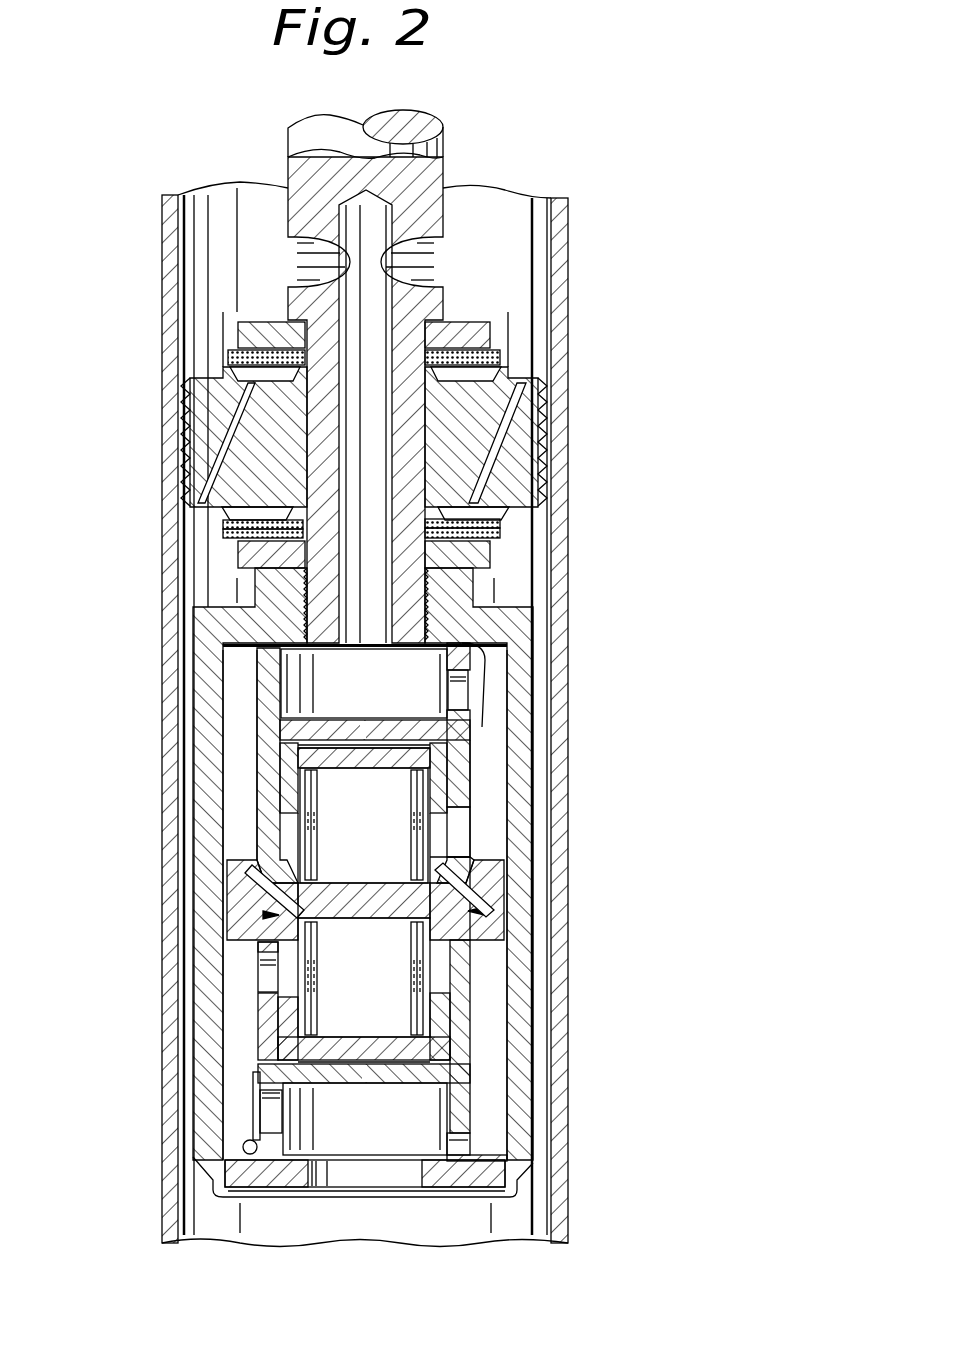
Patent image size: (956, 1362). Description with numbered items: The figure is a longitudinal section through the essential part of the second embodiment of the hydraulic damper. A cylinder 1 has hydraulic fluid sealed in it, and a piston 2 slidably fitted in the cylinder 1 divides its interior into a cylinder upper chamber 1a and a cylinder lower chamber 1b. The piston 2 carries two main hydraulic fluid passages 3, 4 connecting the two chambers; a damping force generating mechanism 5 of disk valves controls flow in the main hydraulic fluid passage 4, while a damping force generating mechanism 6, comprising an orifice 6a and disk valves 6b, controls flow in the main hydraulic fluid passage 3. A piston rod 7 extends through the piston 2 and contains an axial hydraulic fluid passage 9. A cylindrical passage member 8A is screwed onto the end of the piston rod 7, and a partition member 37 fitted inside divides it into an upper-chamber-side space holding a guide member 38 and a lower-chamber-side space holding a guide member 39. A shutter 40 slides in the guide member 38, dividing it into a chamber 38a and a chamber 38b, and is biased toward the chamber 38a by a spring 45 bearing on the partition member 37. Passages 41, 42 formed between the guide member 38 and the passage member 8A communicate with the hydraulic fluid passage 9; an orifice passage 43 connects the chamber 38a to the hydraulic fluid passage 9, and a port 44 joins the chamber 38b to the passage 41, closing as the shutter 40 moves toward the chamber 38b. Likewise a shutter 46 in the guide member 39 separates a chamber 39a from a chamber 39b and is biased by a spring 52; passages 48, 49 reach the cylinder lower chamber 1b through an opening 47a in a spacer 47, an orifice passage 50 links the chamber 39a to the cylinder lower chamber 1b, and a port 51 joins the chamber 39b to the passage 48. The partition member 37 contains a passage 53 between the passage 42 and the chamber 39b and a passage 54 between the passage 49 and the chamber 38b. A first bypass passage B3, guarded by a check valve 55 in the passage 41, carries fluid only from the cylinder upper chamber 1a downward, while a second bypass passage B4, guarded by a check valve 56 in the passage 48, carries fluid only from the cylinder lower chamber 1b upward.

The cylinder 1 is at (568, 215).
The cylinder upper chamber 1a is at (510, 217).
The cylinder lower chamber 1b is at (408, 1230).
The piston 2 is at (520, 437).
The main hydraulic fluid passage 3 is at (502, 360).
The main hydraulic fluid passage 4 is at (208, 504).
The damping force generating mechanism 5 is at (230, 363).
The damping force generating mechanism 6 is at (459, 509).
The orifice 6a is at (505, 523).
The disk valves 6b is at (503, 535).
The piston rod 7 is at (288, 145).
The cylindrical passage member 8A is at (505, 630).
The hydraulic fluid passage 9 is at (368, 317).
The partition member 37 is at (483, 870).
The guide member 38 is at (468, 765).
The chamber 38a is at (345, 730).
The chamber 38b is at (297, 828).
The guide member 39 is at (458, 1058).
The chamber 39a is at (465, 1122).
The chamber 39b is at (385, 972).
The shutter 40 is at (253, 748).
The passage 41 is at (490, 790).
The passage 42 is at (245, 796).
The orifice passage 43 is at (357, 716).
The port 44 is at (460, 843).
The spring 45 is at (300, 850).
The shutter 46 is at (267, 1037).
The spacer 47 is at (500, 1175).
The opening 47a is at (417, 1170).
The passage 48 is at (242, 1072).
The passage 49 is at (490, 1135).
The orifice passage 50 is at (367, 1085).
The port 51 is at (275, 995).
The spring 52 is at (450, 1010).
The passage 53 is at (262, 900).
The passage 54 is at (490, 930).
The check valve 55 is at (482, 694).
The check valve 56 is at (255, 1120).
The first bypass passage B3 is at (487, 910).
The second bypass passage B4 is at (270, 918).